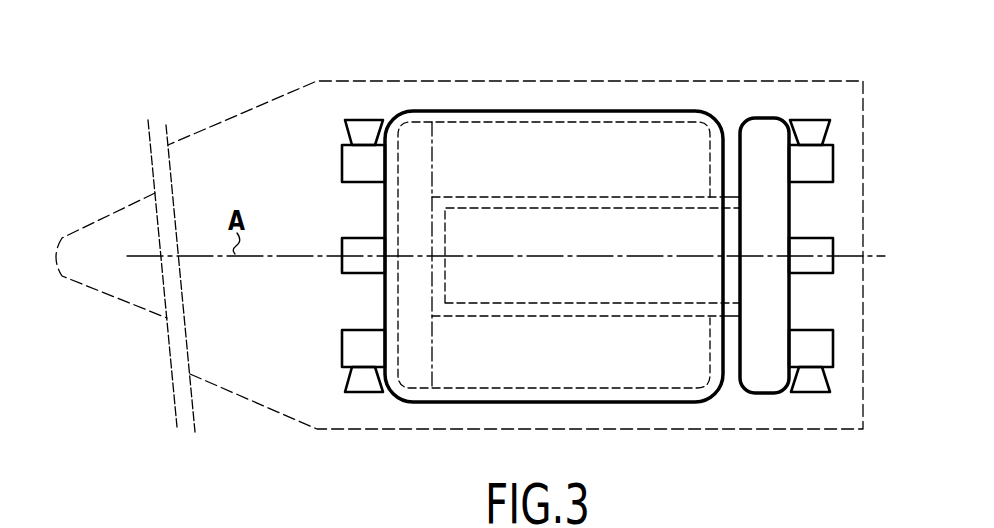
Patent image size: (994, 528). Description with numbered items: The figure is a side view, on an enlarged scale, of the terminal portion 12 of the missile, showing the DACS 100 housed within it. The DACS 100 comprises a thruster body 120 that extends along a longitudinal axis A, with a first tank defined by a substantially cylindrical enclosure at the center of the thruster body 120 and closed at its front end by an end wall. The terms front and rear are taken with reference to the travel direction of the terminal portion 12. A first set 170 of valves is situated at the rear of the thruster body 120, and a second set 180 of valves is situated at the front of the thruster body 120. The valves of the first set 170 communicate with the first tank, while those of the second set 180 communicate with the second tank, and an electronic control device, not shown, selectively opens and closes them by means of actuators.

The terminal portion 12 is at (316, 82).
The DACS 100 is at (527, 103).
The thruster body 120 is at (632, 108).
The first set of valves 170 is at (807, 395).
The second set of valves 180 is at (360, 394).